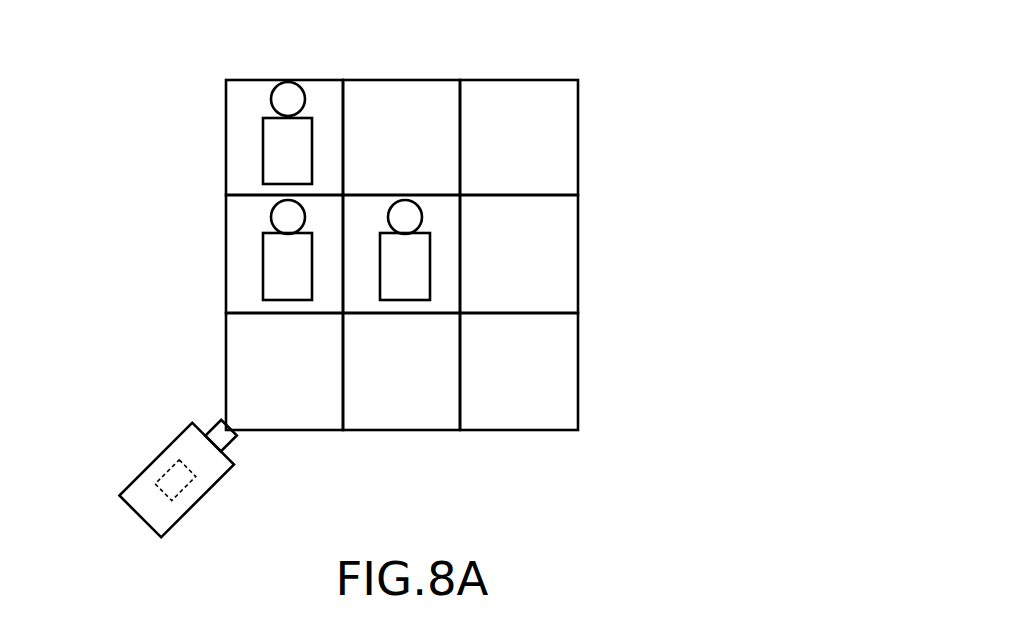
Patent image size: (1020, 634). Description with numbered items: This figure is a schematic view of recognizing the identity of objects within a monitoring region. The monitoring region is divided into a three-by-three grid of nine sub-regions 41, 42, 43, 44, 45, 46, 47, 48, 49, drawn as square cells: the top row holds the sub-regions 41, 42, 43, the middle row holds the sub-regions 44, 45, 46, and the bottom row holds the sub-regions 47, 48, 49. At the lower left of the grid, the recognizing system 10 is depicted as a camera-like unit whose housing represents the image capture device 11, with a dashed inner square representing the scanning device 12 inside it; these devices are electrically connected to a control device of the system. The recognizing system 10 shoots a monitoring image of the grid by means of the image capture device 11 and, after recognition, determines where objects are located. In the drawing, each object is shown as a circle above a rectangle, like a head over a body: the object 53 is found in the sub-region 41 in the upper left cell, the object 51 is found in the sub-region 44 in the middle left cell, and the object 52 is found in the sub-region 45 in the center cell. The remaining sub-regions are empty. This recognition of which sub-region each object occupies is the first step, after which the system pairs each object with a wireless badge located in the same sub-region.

The recognizing system 10 is at (129, 454).
The image capture device 11 is at (140, 493).
The scanning device 12 is at (167, 463).
The sub-region 41 is at (235, 135).
The sub-region 42 is at (402, 85).
The sub-region 43 is at (570, 135).
The sub-region 44 is at (237, 282).
The sub-region 45 is at (450, 213).
The sub-region 46 is at (563, 285).
The sub-region 47 is at (235, 352).
The sub-region 48 is at (400, 422).
The sub-region 49 is at (568, 383).
The object 51 is at (285, 218).
The object 52 is at (410, 213).
The object 53 is at (287, 95).